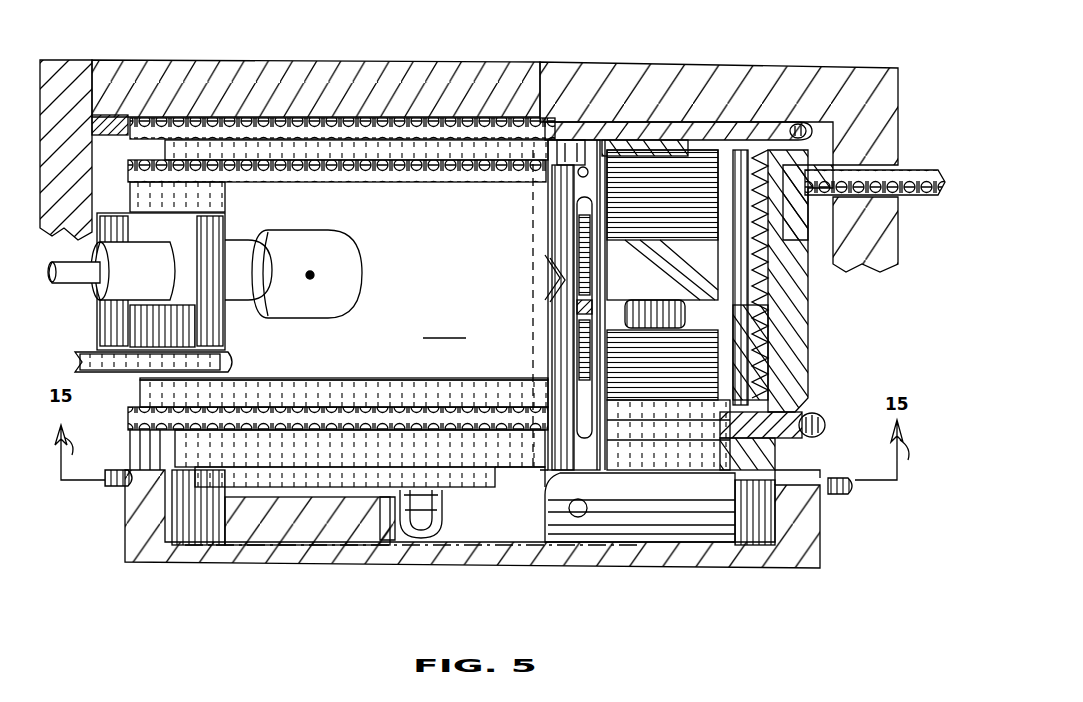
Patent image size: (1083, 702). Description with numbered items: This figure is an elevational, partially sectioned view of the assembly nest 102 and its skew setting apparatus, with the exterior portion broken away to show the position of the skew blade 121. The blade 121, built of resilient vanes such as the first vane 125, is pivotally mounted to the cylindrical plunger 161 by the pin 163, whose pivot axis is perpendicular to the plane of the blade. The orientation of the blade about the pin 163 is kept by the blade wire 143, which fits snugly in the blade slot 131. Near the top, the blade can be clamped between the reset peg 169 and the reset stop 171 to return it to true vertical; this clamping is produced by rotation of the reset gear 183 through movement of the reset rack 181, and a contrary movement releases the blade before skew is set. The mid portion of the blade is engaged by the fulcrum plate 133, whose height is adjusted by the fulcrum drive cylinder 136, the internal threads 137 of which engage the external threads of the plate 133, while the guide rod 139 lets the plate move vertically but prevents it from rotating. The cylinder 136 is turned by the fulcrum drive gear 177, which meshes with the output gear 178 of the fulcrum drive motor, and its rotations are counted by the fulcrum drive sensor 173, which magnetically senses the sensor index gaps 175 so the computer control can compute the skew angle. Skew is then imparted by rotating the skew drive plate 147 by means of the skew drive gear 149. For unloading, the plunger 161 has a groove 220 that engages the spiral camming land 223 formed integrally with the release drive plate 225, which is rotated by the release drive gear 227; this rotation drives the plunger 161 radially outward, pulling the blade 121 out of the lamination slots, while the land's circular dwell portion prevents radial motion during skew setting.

The assembly nest 102 is at (444, 328).
The skew blade 121 is at (572, 330).
The first vane 125 is at (770, 448).
The blade slot 131 is at (560, 250).
The fulcrum plate 133 is at (643, 259).
The fulcrum drive cylinder 136 is at (798, 360).
The internal threads 137 is at (712, 155).
The guide rod 139 is at (778, 310).
The blade wire 143 is at (577, 306).
The skew drive plate 147 is at (820, 548).
The skew drive gear 149 is at (112, 488).
The plunger 161 is at (676, 498).
The pin 163 is at (578, 518).
The reset peg 169 is at (560, 140).
The reset stop 171 is at (644, 140).
The fulcrum drive sensor 173 is at (250, 240).
The sensor index gaps 175 is at (340, 232).
The fulcrum drive gear 177 is at (178, 162).
The output gear 178 is at (908, 172).
The reset rack 181 is at (108, 118).
The reset gear 183 is at (250, 125).
The groove 220 is at (256, 492).
The spiral camming land 223 is at (762, 478).
The release drive plate 225 is at (384, 456).
The release drive gear 227 is at (812, 412).